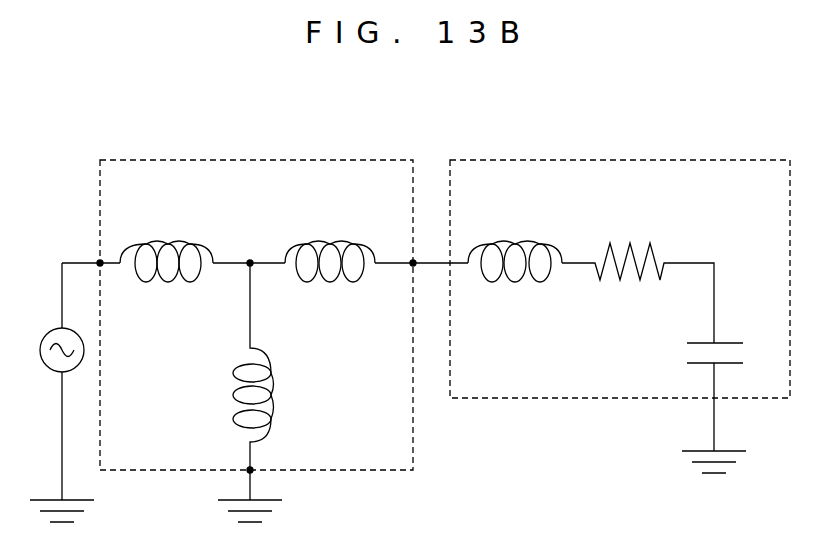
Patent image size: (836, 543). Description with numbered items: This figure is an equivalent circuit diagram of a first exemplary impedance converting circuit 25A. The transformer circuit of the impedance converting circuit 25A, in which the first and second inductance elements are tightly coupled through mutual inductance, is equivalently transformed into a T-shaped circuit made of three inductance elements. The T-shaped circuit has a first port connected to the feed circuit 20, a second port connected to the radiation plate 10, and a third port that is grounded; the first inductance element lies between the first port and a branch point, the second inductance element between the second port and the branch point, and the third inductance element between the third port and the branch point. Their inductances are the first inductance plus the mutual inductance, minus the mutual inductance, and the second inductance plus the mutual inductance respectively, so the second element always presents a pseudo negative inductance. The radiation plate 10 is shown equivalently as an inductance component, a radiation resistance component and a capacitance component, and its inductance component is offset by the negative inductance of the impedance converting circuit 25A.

The impedance converting circuit 25A is at (257, 160).
The radiation plate 10 is at (620, 160).
The feed circuit 20 is at (84, 348).